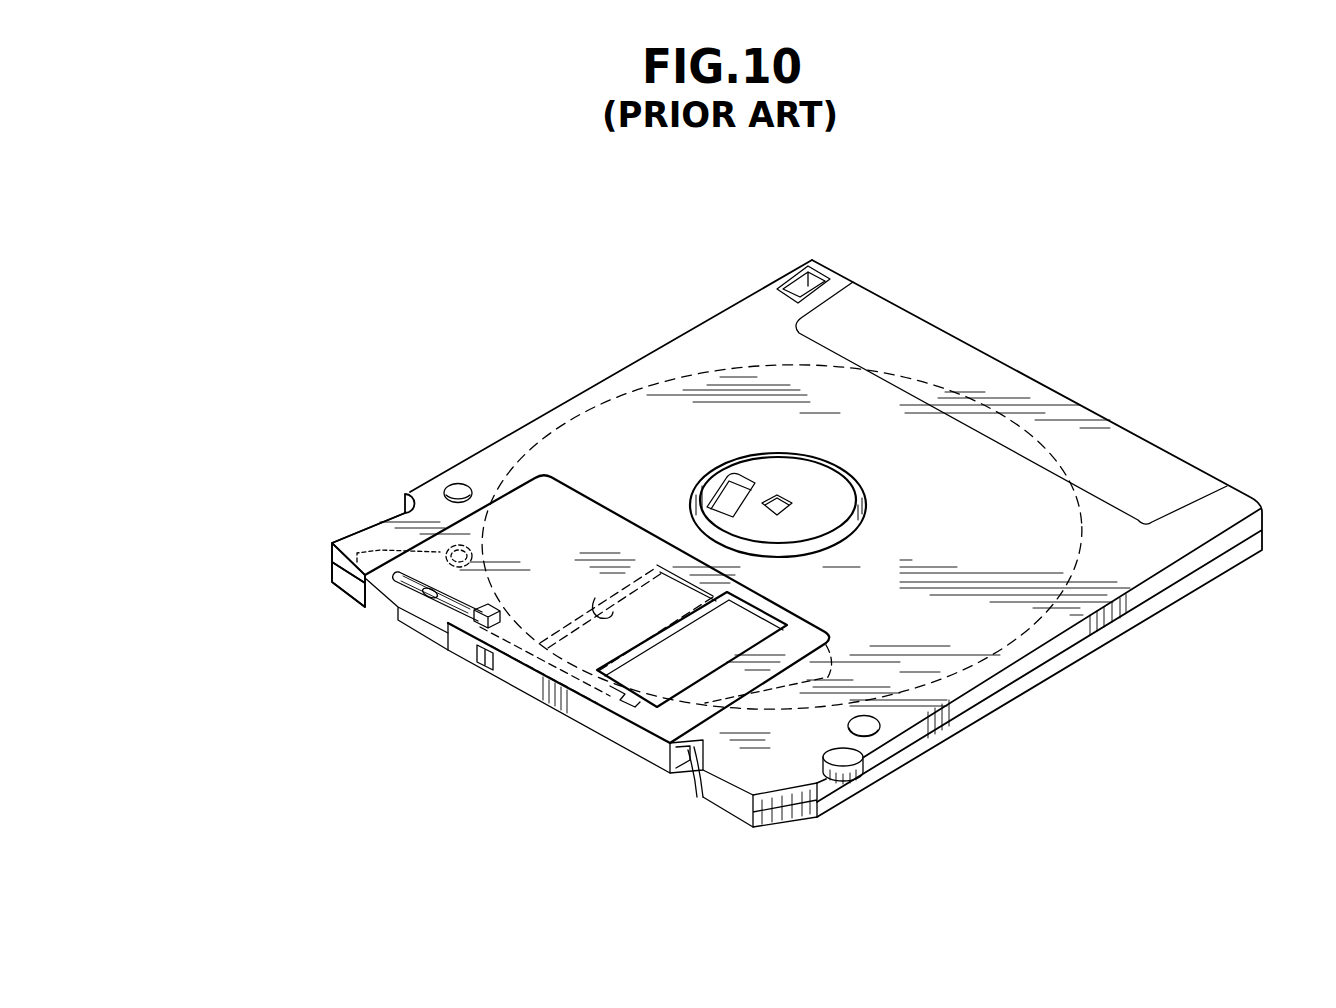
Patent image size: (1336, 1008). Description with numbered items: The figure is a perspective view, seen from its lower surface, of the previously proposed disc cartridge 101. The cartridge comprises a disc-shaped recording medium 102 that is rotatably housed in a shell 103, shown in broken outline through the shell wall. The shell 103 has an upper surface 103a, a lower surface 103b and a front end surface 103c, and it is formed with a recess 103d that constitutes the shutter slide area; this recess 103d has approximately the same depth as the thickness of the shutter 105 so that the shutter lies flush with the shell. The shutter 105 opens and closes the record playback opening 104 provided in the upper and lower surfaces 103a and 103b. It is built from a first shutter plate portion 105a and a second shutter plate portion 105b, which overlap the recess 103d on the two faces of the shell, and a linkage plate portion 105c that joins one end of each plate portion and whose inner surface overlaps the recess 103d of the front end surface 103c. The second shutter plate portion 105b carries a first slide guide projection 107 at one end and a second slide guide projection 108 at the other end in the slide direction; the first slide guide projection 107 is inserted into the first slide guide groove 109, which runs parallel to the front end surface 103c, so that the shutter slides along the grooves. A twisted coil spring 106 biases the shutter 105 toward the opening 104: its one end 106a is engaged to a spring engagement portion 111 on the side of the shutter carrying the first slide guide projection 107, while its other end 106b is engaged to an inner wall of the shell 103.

The disc cartridge 101 is at (1000, 315).
The disc-shaped recording medium 102 is at (872, 370).
The shell 103 is at (487, 447).
The upper surface 103a is at (668, 376).
The lower surface 103b is at (720, 330).
The front end surface 103c is at (367, 586).
The recess 103d is at (597, 600).
The record playback opening 104 is at (535, 600).
The shutter 105 is at (768, 873).
The first shutter plate portion 105a is at (703, 797).
The second shutter plate portion 105b is at (733, 705).
The linkage plate portion 105c is at (637, 742).
The spring 106 is at (378, 548).
The one end of the spring 106a is at (477, 652).
The other end of the spring 106b is at (445, 552).
The first slide guide projection 107 is at (447, 628).
The second slide guide projection 108 is at (607, 707).
The first slide guide groove 109 is at (420, 598).
The spring engagement portion 111 is at (490, 648).